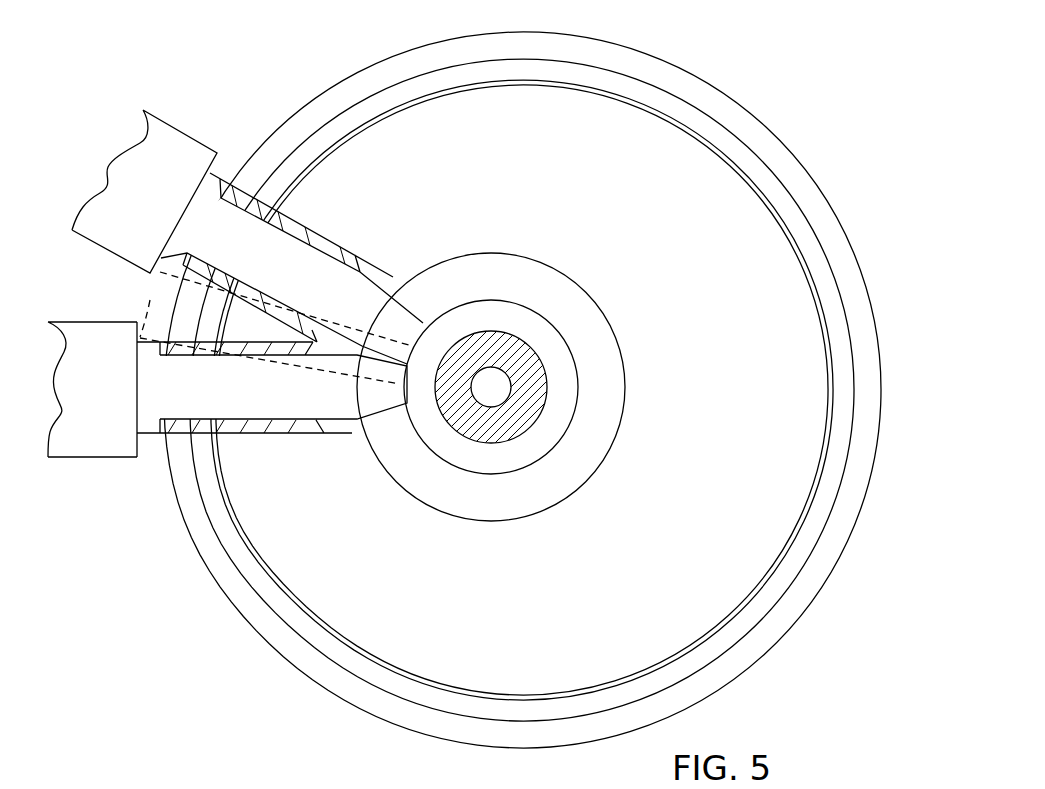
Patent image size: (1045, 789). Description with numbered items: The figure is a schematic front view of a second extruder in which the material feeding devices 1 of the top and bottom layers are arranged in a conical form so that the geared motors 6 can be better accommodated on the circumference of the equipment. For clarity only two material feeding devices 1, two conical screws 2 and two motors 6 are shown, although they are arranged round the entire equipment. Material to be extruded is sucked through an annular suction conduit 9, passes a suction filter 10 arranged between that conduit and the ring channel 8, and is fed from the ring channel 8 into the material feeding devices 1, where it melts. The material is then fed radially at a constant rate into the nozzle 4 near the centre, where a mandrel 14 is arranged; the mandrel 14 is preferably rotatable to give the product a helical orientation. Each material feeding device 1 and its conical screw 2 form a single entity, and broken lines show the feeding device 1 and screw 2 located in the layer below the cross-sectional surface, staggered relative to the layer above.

The material feeding device 1 is at (293, 263).
The conical screw 2 is at (420, 322).
The nozzle 4 is at (437, 433).
The geared motor 6 is at (175, 167).
The ring channel 8 is at (331, 100).
The annular suction conduit 9 is at (505, 70).
The suction filter 10 is at (413, 72).
The mandrel 14 is at (483, 435).